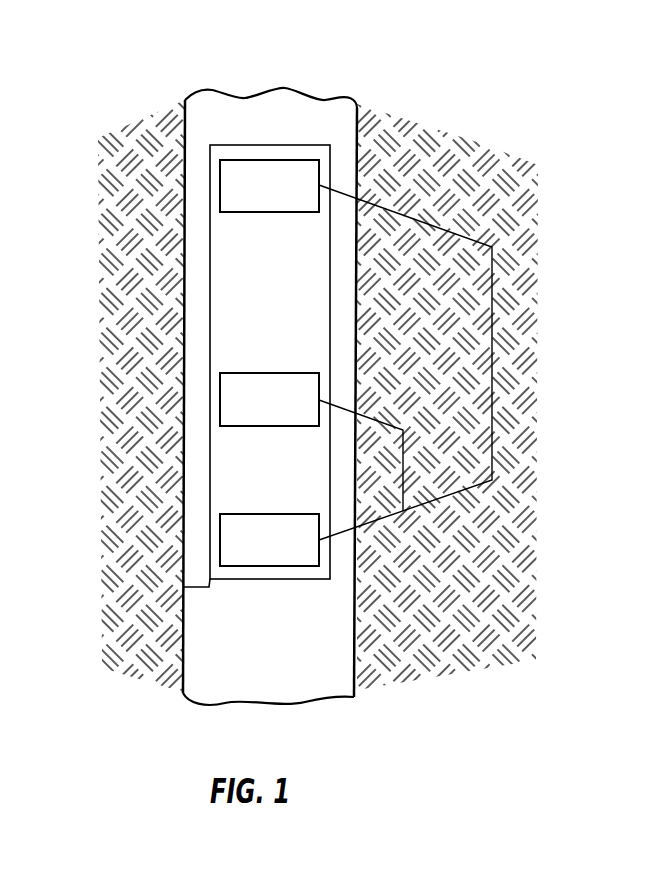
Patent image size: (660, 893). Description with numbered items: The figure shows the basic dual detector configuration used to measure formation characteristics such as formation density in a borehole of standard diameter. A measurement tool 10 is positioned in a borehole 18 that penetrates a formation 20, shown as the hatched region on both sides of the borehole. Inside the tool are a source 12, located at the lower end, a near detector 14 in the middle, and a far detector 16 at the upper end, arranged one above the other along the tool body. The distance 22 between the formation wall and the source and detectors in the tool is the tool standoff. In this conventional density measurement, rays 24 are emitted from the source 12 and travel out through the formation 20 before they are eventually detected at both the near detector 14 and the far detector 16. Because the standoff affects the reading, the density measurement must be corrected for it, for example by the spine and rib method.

The measurement tool 10 is at (295, 147).
The source 12 is at (270, 567).
The near detector 14 is at (220, 397).
The far detector 16 is at (273, 213).
The borehole 18 is at (280, 112).
The formation 20 is at (476, 195).
The distance 22 is at (197, 588).
The rays 24 is at (492, 320).